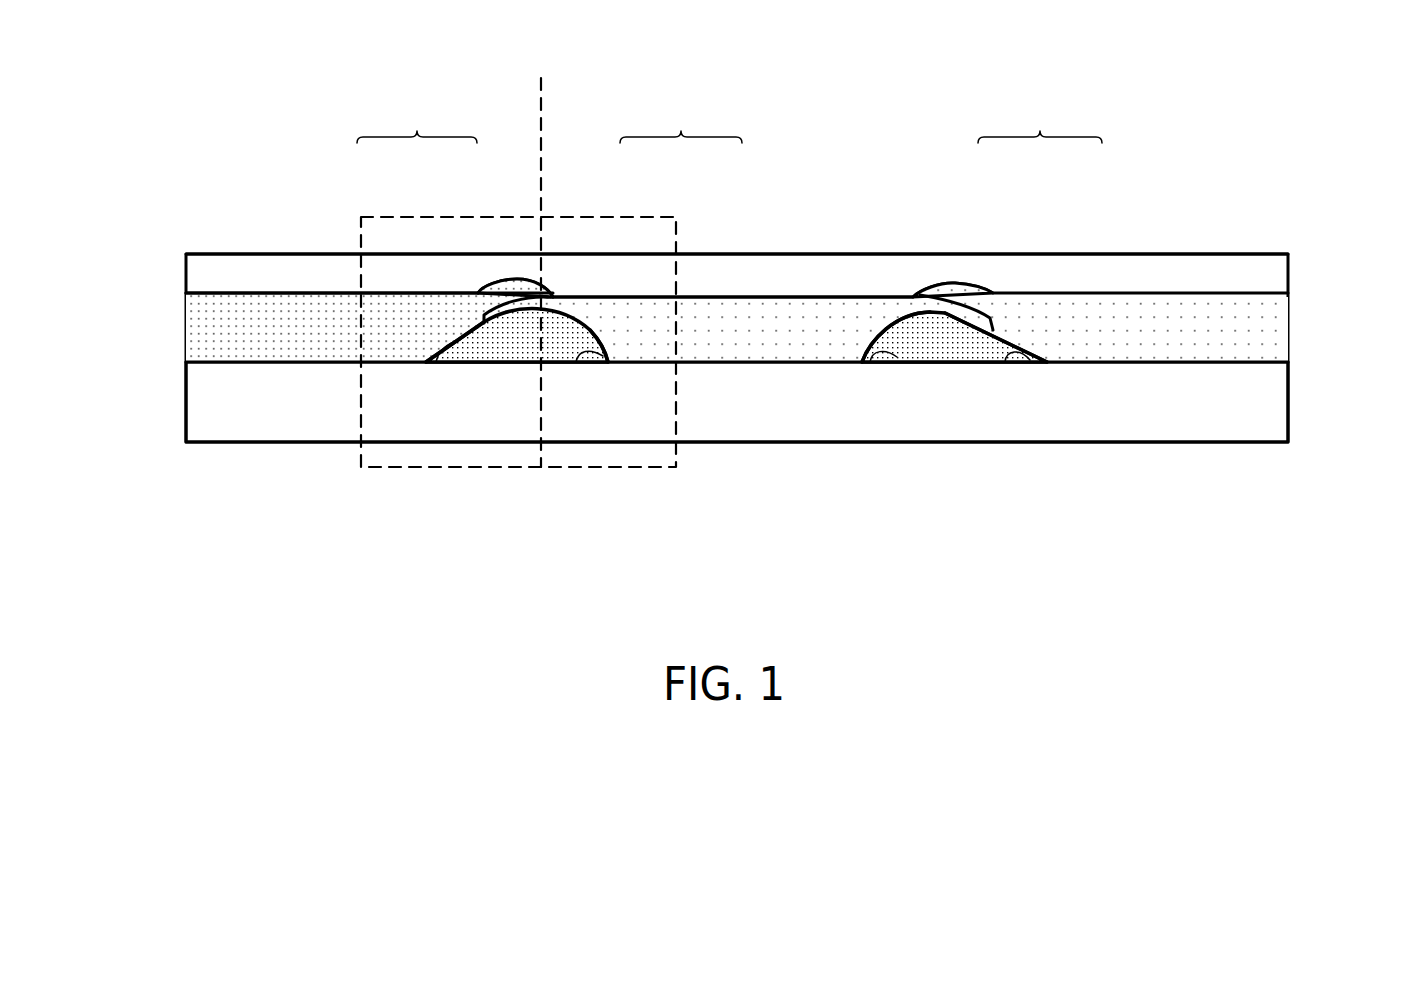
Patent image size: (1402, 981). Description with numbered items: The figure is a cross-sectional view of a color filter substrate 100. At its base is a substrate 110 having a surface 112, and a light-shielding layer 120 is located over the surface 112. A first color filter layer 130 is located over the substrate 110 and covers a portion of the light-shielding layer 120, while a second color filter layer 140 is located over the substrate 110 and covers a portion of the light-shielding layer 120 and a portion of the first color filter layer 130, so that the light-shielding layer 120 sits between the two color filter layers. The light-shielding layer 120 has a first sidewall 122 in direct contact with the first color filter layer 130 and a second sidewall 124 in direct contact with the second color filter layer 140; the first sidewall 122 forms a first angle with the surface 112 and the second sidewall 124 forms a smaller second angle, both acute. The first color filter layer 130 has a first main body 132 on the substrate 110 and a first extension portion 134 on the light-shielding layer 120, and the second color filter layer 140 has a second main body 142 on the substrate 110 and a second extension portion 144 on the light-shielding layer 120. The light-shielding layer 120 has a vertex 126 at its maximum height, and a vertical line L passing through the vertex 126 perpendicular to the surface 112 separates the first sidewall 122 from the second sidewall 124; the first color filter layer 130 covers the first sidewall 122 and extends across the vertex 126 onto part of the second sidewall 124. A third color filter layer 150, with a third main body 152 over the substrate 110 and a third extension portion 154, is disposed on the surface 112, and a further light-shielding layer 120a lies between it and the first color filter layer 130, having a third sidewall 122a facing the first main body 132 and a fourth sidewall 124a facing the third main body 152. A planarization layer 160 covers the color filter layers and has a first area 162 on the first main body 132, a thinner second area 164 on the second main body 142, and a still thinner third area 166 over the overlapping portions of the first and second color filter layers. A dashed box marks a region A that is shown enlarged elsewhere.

The color filter substrate 100 is at (1321, 112).
The substrate 110 is at (1255, 398).
The surface 112 is at (1233, 352).
The light-shielding layer 120 is at (517, 345).
The light-shielding layer 120a is at (947, 347).
The first sidewall 122 is at (607, 331).
The third sidewall 122a is at (868, 342).
The second sidewall 124 is at (457, 337).
The fourth sidewall 124a is at (1012, 324).
The vertex 126 is at (544, 298).
The first color filter layer 130 is at (613, 211).
The first main body 132 is at (715, 323).
The first extension portion 134 is at (563, 300).
The second color filter layer 140 is at (455, 198).
The second main body 142 is at (400, 325).
The second extension portion 144 is at (493, 297).
The third color filter layer 150 is at (1007, 214).
The third main body 152 is at (1075, 323).
The third extension portion 154 is at (965, 295).
The planarization layer 160 is at (174, 275).
The first area 162 is at (808, 277).
The second area 164 is at (248, 277).
The third area 166 is at (513, 267).
The vertical line L is at (538, 255).
The region A is at (635, 468).